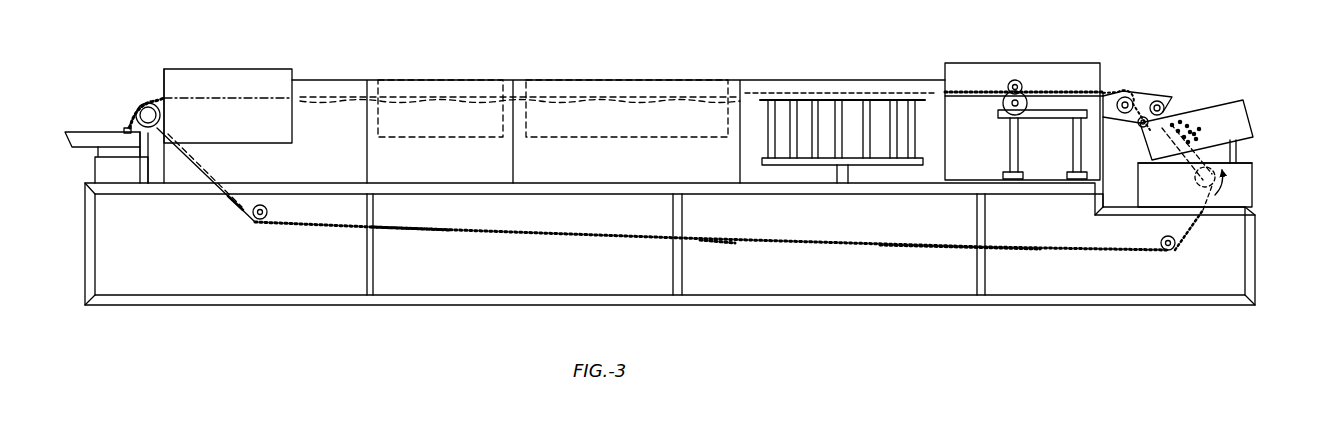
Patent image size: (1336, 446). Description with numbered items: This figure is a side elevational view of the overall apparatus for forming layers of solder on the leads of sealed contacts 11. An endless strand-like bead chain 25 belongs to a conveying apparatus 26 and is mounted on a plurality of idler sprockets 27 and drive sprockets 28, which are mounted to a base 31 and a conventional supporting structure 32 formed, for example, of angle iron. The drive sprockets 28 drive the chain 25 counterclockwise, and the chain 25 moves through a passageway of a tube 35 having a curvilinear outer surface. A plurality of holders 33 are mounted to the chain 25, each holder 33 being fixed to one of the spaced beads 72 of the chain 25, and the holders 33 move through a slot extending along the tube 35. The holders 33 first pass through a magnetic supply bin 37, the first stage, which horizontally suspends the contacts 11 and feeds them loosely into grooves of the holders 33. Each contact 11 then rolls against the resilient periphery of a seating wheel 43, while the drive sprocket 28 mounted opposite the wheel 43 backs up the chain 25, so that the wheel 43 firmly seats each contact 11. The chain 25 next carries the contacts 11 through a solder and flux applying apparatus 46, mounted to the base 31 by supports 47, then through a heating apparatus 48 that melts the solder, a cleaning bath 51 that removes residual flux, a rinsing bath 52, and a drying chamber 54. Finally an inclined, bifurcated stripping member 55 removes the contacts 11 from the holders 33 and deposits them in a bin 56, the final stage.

The sealed contact 11 is at (1195, 130).
The bead chain 25 is at (355, 228).
The conveying apparatus 26 is at (153, 88).
The idler sprocket 27 is at (268, 212).
The drive sprocket 28 is at (158, 120).
The base 31 is at (486, 181).
The supporting structure 32 is at (97, 200).
The holder 33 is at (1088, 86).
The tube 35 is at (970, 98).
The magnetic supply bin 37 is at (1258, 138).
The seating wheel 43 is at (1165, 110).
The solder and flux applying apparatus 46 is at (1032, 78).
The support 47 is at (1073, 120).
The heating apparatus 48 is at (870, 76).
The cleaning bath 51 is at (660, 76).
The rinsing bath 52 is at (483, 76).
The drying chamber 54 is at (275, 66).
The stripping member 55 is at (127, 127).
The bin 56 is at (112, 131).
The bead 72 is at (450, 231).